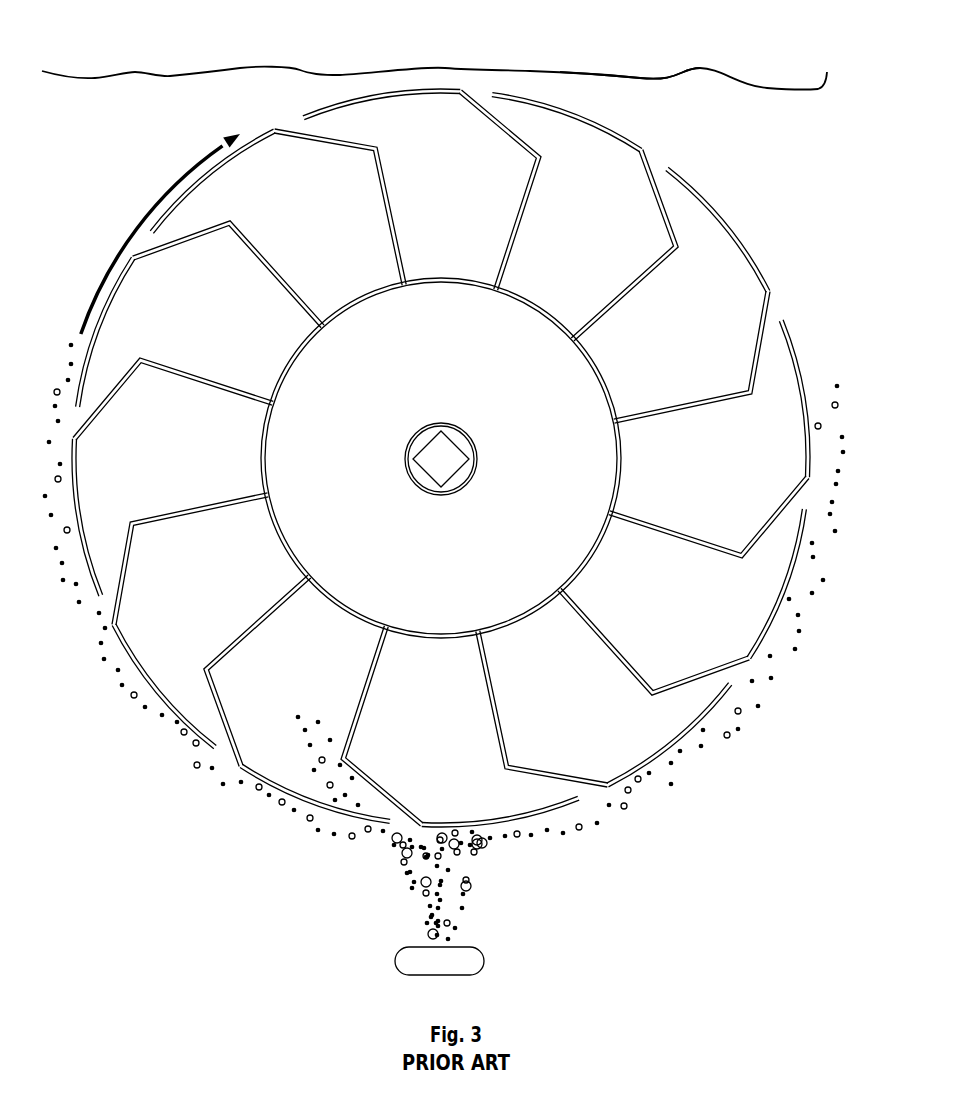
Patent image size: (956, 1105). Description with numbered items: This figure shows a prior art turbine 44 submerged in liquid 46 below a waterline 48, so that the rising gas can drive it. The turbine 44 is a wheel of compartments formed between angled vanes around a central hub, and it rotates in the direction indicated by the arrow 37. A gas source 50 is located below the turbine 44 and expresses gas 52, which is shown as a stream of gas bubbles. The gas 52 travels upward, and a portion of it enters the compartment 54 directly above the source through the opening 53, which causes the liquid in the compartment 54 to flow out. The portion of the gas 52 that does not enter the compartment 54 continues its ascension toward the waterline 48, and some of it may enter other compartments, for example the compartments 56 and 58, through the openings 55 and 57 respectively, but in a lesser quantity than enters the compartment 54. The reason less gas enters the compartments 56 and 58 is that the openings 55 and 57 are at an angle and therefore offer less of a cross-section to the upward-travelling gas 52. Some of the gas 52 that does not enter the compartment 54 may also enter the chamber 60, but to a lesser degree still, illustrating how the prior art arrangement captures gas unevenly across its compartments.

The arrow 37 is at (118, 255).
The prior art turbine 44 is at (131, 131).
The liquid 46 is at (627, 92).
The waterline 48 is at (463, 70).
The gas source 50 is at (475, 957).
The gas 52 is at (72, 565).
The opening 53 is at (398, 822).
The compartment 54 is at (257, 671).
The opening 55 is at (222, 748).
The compartment 56 is at (190, 559).
The opening 57 is at (103, 607).
The compartment 58 is at (173, 409).
The chamber 60 is at (388, 726).